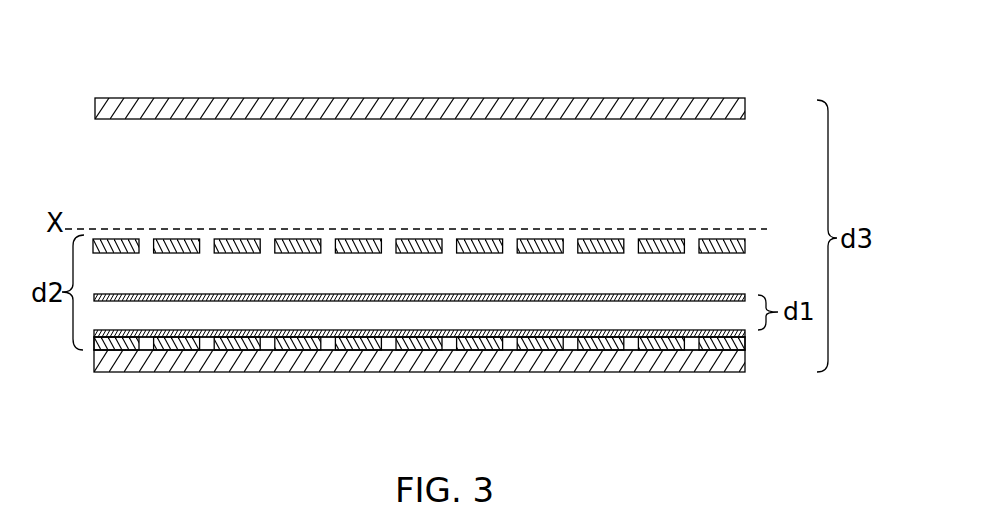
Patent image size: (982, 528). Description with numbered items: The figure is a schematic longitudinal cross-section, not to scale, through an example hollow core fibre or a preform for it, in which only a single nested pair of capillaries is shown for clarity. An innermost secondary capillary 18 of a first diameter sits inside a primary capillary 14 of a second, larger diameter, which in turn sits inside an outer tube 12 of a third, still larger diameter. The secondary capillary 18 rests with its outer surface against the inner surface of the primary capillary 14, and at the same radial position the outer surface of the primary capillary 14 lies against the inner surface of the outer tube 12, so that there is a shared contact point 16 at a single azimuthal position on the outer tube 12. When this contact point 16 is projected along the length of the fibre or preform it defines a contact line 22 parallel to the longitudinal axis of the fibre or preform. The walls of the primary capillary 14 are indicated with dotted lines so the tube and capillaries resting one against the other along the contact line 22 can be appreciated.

The outer tube 12 is at (727, 98).
The primary capillary 14 is at (662, 238).
The shared contact point 16 is at (758, 337).
The secondary capillary 18 is at (727, 294).
The contact line 22 is at (745, 385).